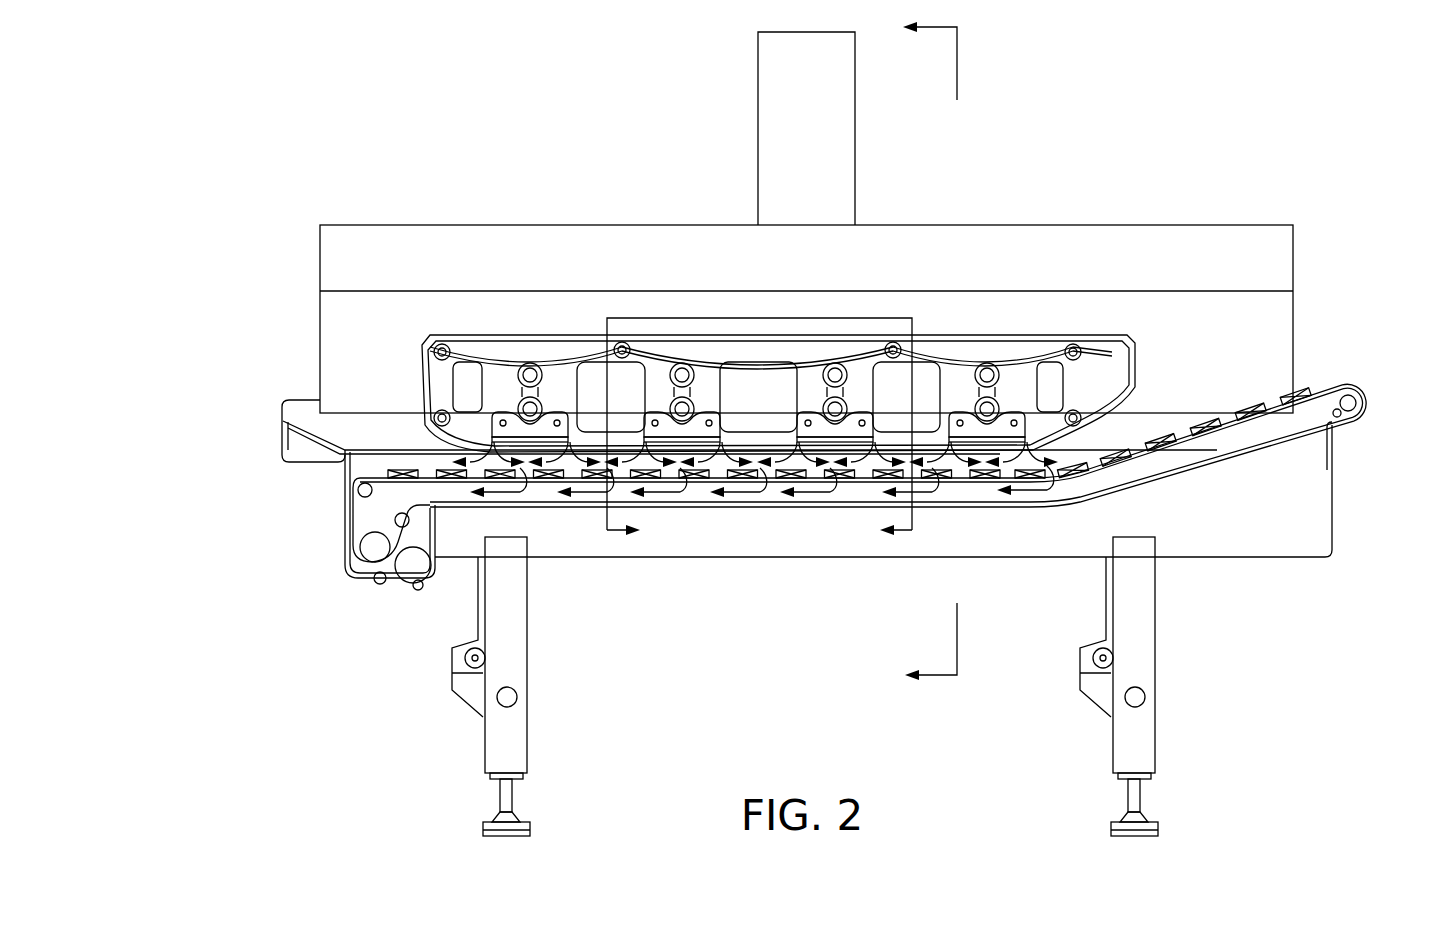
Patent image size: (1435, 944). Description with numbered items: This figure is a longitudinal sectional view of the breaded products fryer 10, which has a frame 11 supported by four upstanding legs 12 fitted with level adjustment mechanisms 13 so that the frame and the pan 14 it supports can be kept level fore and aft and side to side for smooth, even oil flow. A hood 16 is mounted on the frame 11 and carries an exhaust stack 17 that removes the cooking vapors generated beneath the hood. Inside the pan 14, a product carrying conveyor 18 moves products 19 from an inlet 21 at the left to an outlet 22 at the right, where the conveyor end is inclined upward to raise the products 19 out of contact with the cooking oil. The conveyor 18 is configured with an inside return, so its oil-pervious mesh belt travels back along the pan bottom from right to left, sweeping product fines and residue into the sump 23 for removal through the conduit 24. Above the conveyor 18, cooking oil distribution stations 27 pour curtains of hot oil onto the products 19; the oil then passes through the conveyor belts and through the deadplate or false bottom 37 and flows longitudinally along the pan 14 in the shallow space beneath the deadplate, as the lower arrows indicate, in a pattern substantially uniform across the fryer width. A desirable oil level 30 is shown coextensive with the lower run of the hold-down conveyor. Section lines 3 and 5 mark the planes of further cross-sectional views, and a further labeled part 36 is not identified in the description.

The section line 3- 3 is at (759, 433).
The section line 5- 5 is at (914, 351).
The breaded products fryer 10 is at (925, 202).
The frame 11 is at (1036, 558).
The upstanding legs 12 is at (528, 662).
The level adjustment mechanisms 13 is at (513, 800).
The pan 14 is at (1333, 523).
The hood 16 is at (1293, 262).
The exhaust stack 17 is at (855, 68).
The product carrying conveyor 18 is at (358, 486).
The products 19 is at (1265, 397).
The inlet 21 is at (310, 398).
The outlet 22 is at (1328, 392).
The sump 23 is at (382, 582).
The conduit 24 is at (419, 590).
The cooking oil distribution stations 27 is at (532, 364).
The oil level 30 is at (366, 435).
The burner plate 36 is at (1092, 345).
The deadplate or false bottom 37 is at (397, 522).